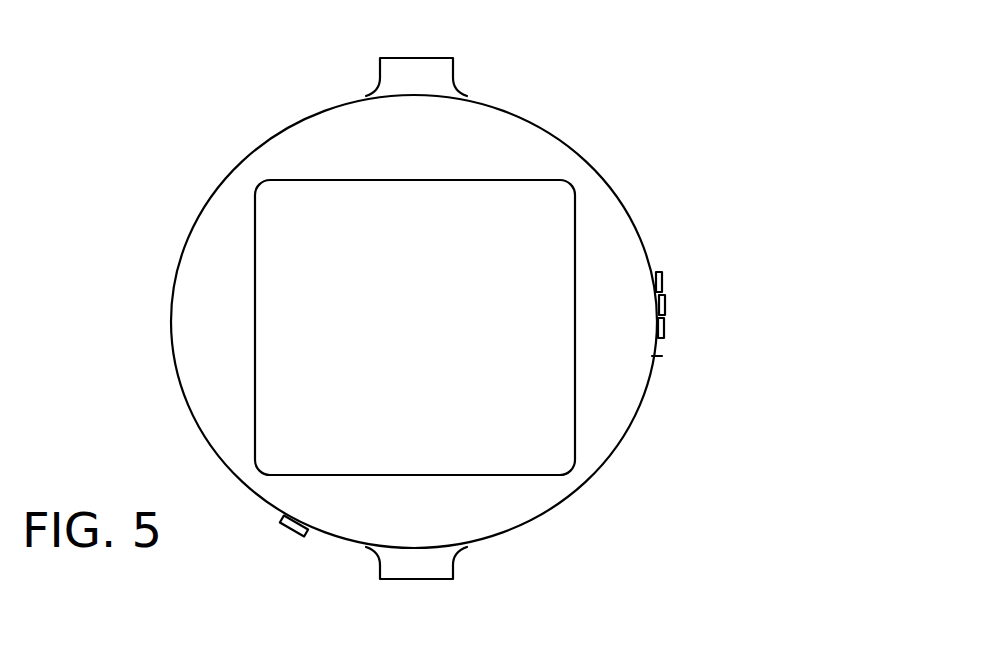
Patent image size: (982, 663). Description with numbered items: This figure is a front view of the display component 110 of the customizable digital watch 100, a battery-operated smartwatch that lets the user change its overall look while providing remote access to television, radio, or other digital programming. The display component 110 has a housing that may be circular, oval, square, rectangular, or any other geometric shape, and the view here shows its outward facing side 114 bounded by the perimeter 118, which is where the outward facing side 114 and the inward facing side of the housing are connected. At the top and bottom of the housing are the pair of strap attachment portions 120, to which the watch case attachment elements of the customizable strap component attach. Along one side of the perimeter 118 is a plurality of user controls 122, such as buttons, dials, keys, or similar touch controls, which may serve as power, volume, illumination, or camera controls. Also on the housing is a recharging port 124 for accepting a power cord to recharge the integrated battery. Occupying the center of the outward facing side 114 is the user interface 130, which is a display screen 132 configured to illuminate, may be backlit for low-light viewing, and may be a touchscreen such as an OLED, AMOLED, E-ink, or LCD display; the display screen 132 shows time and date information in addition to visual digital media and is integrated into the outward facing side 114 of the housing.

The customizable digital watch 100 is at (708, 157).
The display component 110 is at (594, 145).
The outward facing side 114 is at (490, 157).
The perimeter 118 is at (662, 356).
The strap attachment portions 120 is at (445, 94).
The plurality of user controls 122 is at (680, 297).
The recharging port 124 is at (285, 538).
The user interface 130 is at (614, 404).
The display screen 132 is at (543, 457).